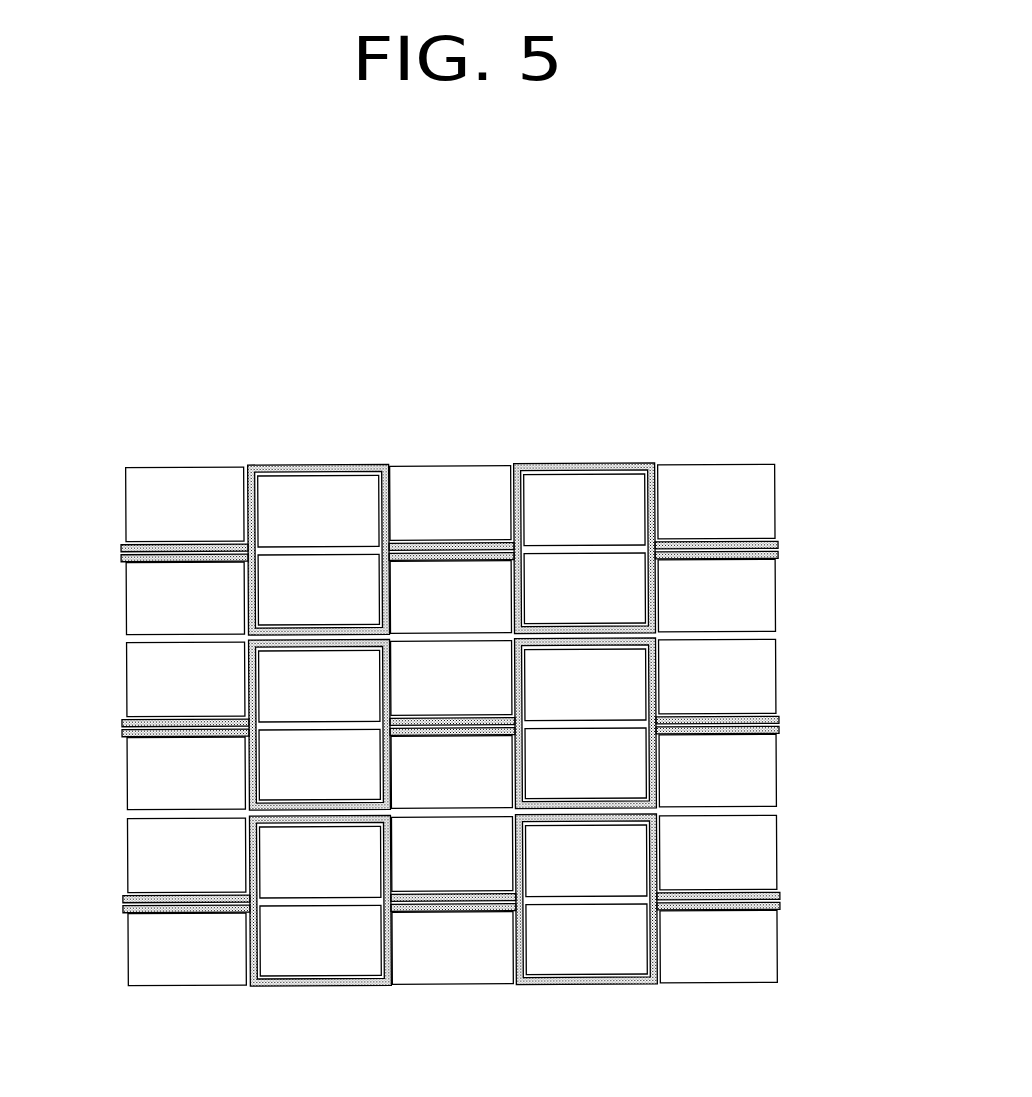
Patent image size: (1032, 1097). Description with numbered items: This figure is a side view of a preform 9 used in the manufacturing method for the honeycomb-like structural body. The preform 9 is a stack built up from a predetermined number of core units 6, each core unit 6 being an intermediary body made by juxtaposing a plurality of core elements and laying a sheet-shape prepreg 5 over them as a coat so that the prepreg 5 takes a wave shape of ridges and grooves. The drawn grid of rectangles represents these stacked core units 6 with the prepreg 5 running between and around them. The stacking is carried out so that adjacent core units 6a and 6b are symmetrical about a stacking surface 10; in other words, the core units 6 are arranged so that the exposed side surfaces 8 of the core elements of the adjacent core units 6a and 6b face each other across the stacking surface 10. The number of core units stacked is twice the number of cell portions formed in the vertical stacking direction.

The sheet-shape prepreg 5 is at (346, 633).
The core unit 6 is at (122, 853).
The core unit 6a is at (782, 587).
The core unit 6b is at (782, 677).
The exposed side surface 8 is at (455, 634).
The preform 9 is at (714, 344).
The stacking surface 10 is at (190, 634).